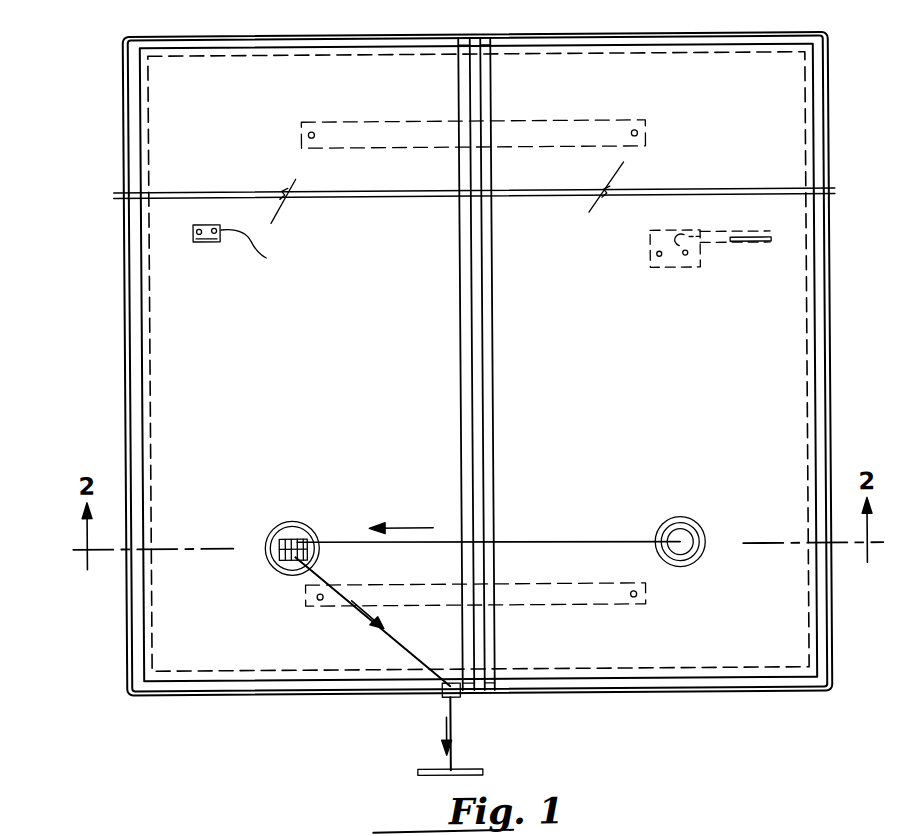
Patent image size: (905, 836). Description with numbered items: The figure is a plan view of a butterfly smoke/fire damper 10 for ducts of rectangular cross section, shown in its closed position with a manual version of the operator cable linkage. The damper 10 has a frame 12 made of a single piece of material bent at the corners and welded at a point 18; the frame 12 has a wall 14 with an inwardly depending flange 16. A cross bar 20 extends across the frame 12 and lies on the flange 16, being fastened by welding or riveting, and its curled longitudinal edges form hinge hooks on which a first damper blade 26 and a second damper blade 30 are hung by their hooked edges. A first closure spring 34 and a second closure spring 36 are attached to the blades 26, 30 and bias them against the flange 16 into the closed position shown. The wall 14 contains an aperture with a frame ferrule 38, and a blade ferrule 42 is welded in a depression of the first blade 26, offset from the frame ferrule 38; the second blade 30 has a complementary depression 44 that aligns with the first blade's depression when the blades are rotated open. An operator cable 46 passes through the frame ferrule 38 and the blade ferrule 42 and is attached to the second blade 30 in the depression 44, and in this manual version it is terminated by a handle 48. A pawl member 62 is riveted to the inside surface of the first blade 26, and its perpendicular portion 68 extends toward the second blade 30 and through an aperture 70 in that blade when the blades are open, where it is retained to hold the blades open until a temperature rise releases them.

The butterfly damper 10 is at (107, 116).
The frame 12 is at (832, 110).
The wall 14 is at (805, 37).
The inwardly depending flange 16 is at (806, 72).
The weld point 18 is at (474, 33).
The cross bar 20 is at (478, 690).
The first damper blade 26 is at (209, 638).
The second damper blade 30 is at (598, 649).
The first closure spring 34 is at (610, 599).
The second closure spring 36 is at (522, 125).
The frame ferrule 38 is at (445, 690).
The blade ferrule 42 is at (286, 524).
The depression 44 is at (682, 536).
The operator cable 46 is at (348, 619).
The handle 48 is at (417, 772).
The pawl member 62 is at (256, 253).
The pawl member portion 68 is at (218, 241).
The aperture 70 is at (765, 248).